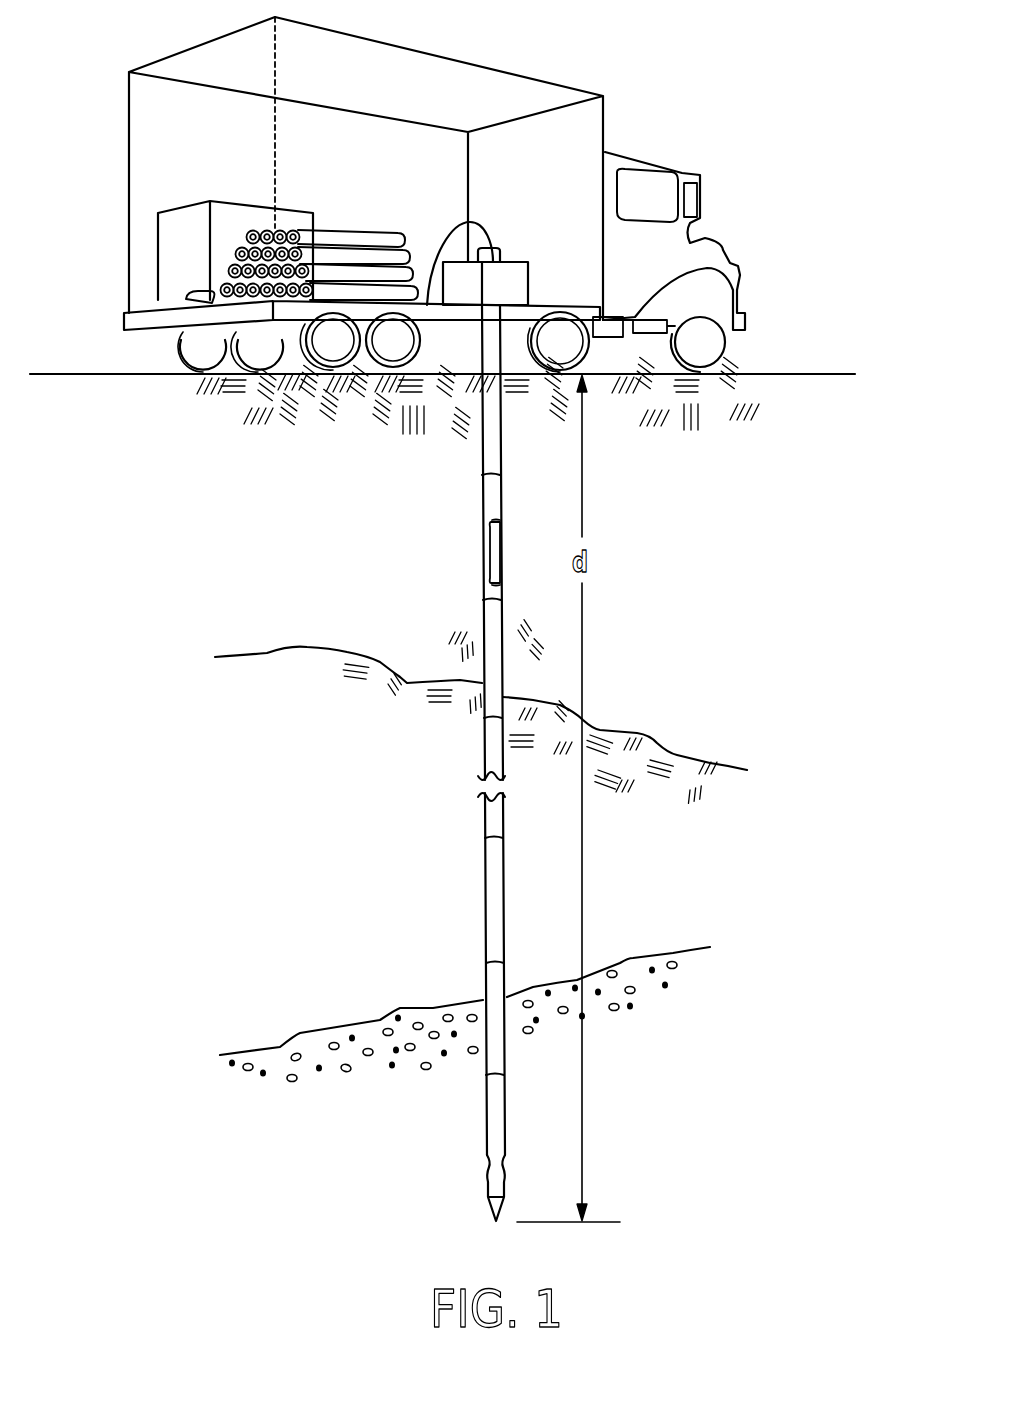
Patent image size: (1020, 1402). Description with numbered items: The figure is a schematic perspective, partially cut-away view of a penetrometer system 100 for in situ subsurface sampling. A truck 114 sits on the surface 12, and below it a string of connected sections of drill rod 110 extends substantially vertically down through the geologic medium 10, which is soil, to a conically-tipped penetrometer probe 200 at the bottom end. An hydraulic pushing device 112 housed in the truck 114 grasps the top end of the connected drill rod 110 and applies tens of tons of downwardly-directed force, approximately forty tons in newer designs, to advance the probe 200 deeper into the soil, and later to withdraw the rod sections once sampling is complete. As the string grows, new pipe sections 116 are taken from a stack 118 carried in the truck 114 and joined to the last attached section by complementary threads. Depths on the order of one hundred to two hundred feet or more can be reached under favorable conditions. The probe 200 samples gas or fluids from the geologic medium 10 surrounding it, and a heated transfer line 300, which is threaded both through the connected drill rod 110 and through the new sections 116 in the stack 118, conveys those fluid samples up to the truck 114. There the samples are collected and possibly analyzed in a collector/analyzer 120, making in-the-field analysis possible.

The penetrometer system 100 is at (751, 62).
The truck 114 is at (605, 131).
The collector/analyzer 120 is at (186, 203).
The new pipe sections 116 is at (333, 232).
The stack 118 is at (377, 224).
The hydraulic pushing device 112 is at (515, 262).
The heated transfer line 300 is at (187, 297).
The surface 12 is at (793, 373).
The drill rod 110 is at (481, 752).
The penetrometer probe 200 is at (487, 1145).
The geologic medium 10 is at (678, 788).